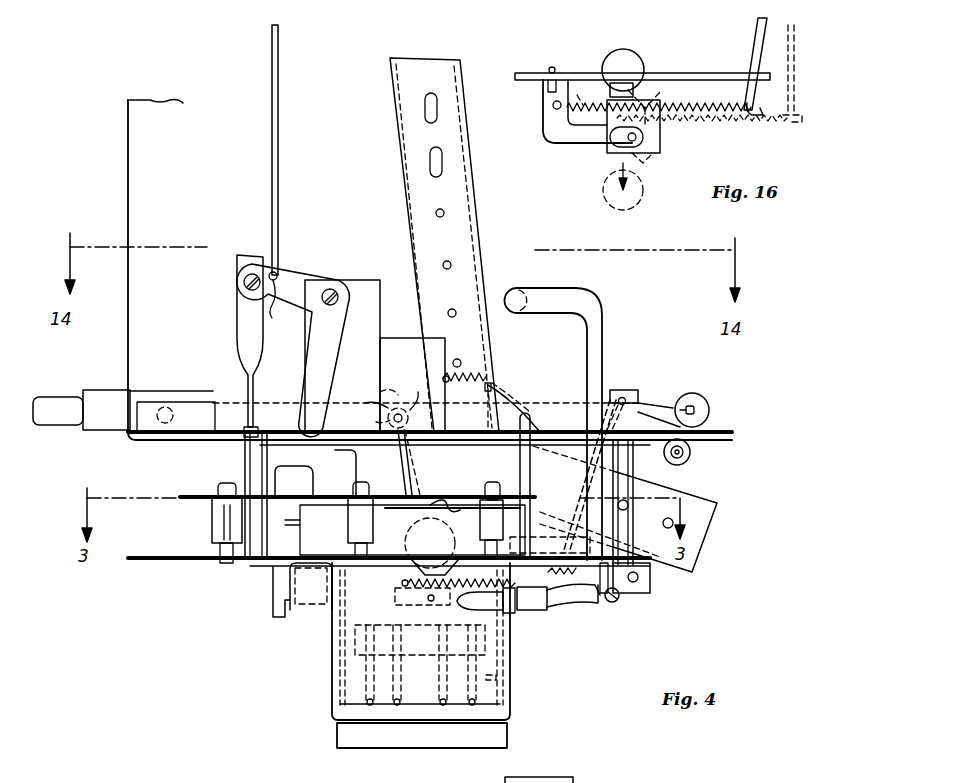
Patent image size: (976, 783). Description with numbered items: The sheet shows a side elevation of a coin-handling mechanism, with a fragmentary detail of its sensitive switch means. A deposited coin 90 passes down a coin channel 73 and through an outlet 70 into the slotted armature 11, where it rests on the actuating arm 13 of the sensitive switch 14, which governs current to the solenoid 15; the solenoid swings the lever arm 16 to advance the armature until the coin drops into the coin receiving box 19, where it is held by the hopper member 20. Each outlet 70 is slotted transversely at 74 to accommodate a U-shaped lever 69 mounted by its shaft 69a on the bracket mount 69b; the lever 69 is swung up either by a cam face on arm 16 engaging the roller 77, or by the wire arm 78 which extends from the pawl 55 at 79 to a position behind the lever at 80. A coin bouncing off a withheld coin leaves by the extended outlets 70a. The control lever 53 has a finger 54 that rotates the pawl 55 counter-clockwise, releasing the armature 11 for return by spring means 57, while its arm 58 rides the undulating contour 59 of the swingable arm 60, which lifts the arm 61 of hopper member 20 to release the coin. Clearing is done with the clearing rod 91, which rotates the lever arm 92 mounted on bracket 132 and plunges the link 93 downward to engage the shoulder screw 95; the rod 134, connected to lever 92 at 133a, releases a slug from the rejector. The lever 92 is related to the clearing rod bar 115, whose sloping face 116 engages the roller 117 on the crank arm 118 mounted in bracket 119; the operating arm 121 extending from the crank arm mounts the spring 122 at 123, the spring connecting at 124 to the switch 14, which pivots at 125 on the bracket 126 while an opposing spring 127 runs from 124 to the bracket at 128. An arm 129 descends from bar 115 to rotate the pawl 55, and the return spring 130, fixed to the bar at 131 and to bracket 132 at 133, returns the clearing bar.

In FIG. 4, the rod 134 is at (280, 176).
In FIG. 4, the lever arm 92 is at (276, 274).
In FIG. 4, the bracket 132 is at (367, 280).
In FIG. 4, the coin channel 73 is at (462, 190).
In FIG. 4, the link 93 is at (237, 322).
In FIG. 4, the connection point 133a is at (272, 300).
In FIG. 4, the connection point 133 is at (446, 372).
In FIG. 4, the return spring 130 is at (490, 382).
In FIG. 4, the connection point 131 is at (497, 388).
In FIG. 4, the control lever 53 is at (596, 342).
In FIG. 4, the arm 129 is at (526, 440).
In FIG. 4, the bracket 119 is at (630, 390).
In FIG. 4, the crank arm 118 is at (640, 402).
In FIG. 4, the sloping face 116 is at (680, 398).
In FIG. 4, the roller 117 is at (710, 403).
In FIG. 4, the clearing rod bar 115 is at (228, 396).
In FIG. 4, the clearing rod 91 is at (110, 420).
In FIG. 4, the shaft 69a is at (380, 392).
In FIG. 4, the U-shaped lever 69 is at (412, 408).
In FIG. 4, the bracket mount 69b is at (365, 416).
In FIG. 4, the lever arm 16 is at (270, 474).
In FIG. 4, the solenoid 15 is at (345, 450).
In FIG. 4, the roller 77 is at (400, 463).
In FIG. 4, the position behind lever 80 is at (410, 460).
In FIG. 4, the transverse slot 74 is at (432, 500).
In FIG. 4, the arm 78 is at (488, 484).
In FIG. 4, the finger 54 is at (566, 528).
In FIG. 4, the spring means 57 is at (307, 522).
In FIG. 4, the outlet 70 is at (452, 514).
In FIG. 4, the pawl 55 is at (518, 546).
In FIG. 4, the extended outlet 70a is at (713, 524).
In FIG. 4, the slotted armature 11 is at (300, 542).
In FIG. 4, the actuating arm 13 is at (403, 583).
In FIG. 16, the actuating arm 13 is at (604, 95).
In FIG. 4, the coin 90 is at (443, 585).
In FIG. 16, the coin 90 is at (632, 58).
In FIG. 4, the extension point 79 is at (547, 578).
In FIG. 4, the shoulder screw 95 is at (273, 590).
In FIG. 4, the sensitive switch 14 is at (432, 598).
In FIG. 16, the sensitive switch 14 is at (660, 152).
In FIG. 4, the arm 61 is at (514, 612).
In FIG. 4, the undulating contour 59 is at (565, 600).
In FIG. 4, the swingable arm 60 is at (560, 605).
In FIG. 4, the operating arm 121 is at (607, 600).
In FIG. 16, the operating arm 121 is at (753, 53).
In FIG. 4, the arm 58 is at (618, 604).
In FIG. 4, the coin receiving box 19 is at (330, 690).
In FIG. 4, the hopper member 20 is at (352, 698).
In FIG. 16, the opposing spring 127 is at (582, 98).
In FIG. 16, the connection point 124 is at (645, 98).
In FIG. 16, the spring 122 is at (692, 106).
In FIG. 16, the connection point 128 is at (553, 105).
In FIG. 16, the bracket 126 is at (553, 123).
In FIG. 16, the pivot 125 is at (632, 133).
In FIG. 16, the mounting point 123 is at (758, 117).